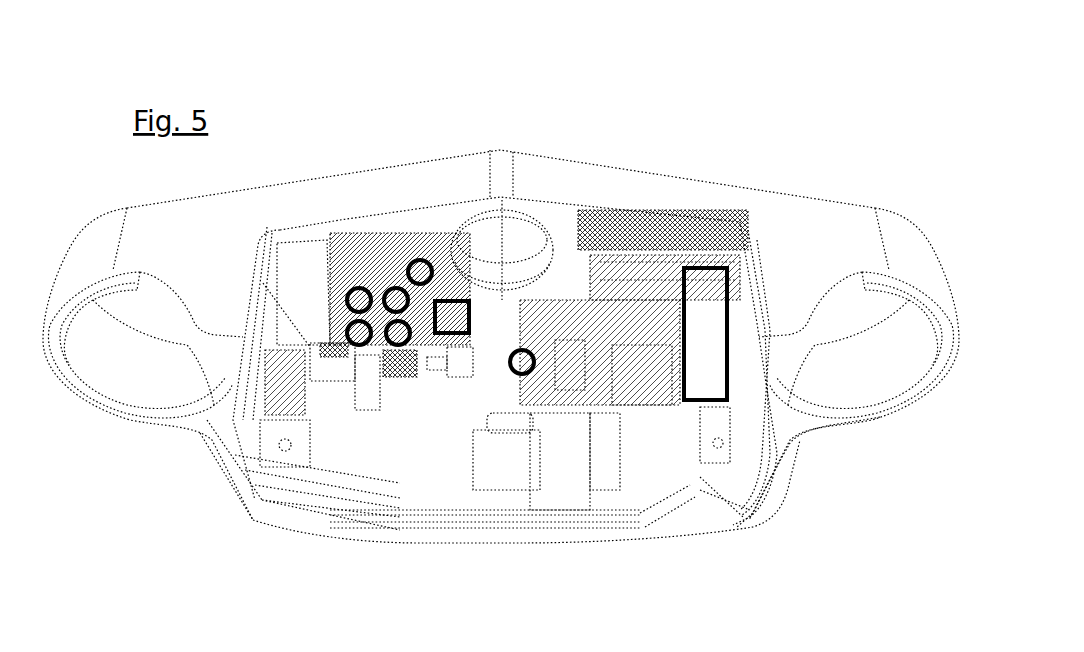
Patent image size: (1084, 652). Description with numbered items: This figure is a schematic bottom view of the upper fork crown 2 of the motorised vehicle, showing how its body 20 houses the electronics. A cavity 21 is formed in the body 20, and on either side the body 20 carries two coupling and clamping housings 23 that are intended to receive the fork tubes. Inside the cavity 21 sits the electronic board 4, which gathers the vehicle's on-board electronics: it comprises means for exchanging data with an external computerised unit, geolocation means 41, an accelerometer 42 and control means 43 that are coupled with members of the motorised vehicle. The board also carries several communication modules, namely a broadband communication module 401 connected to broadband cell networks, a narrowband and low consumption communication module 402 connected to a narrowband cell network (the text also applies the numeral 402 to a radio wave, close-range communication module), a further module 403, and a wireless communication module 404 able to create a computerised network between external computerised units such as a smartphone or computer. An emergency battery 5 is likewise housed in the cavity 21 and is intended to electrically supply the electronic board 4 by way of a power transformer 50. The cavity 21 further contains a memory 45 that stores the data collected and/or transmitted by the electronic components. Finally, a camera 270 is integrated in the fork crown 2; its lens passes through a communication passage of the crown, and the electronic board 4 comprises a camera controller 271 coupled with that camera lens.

The upper fork crown 2 is at (781, 96).
The body 20 is at (305, 215).
The cavity 21 is at (583, 492).
The coupling and clamping housings 23 is at (152, 362).
The electronic board 4 is at (600, 227).
The geolocation means 41 is at (361, 290).
The broadband communication module 401 is at (396, 290).
The narrowband and low consumption communication module 402 is at (573, 370).
The button 403 is at (365, 330).
The wireless communication module 404 is at (402, 330).
The accelerometer 42 is at (457, 313).
The control means 43 is at (422, 272).
The memory 45 is at (518, 367).
The emergency battery 5 is at (707, 390).
The power transformer 50 is at (643, 380).
The camera 270 is at (503, 487).
The camera controller 271 is at (403, 390).